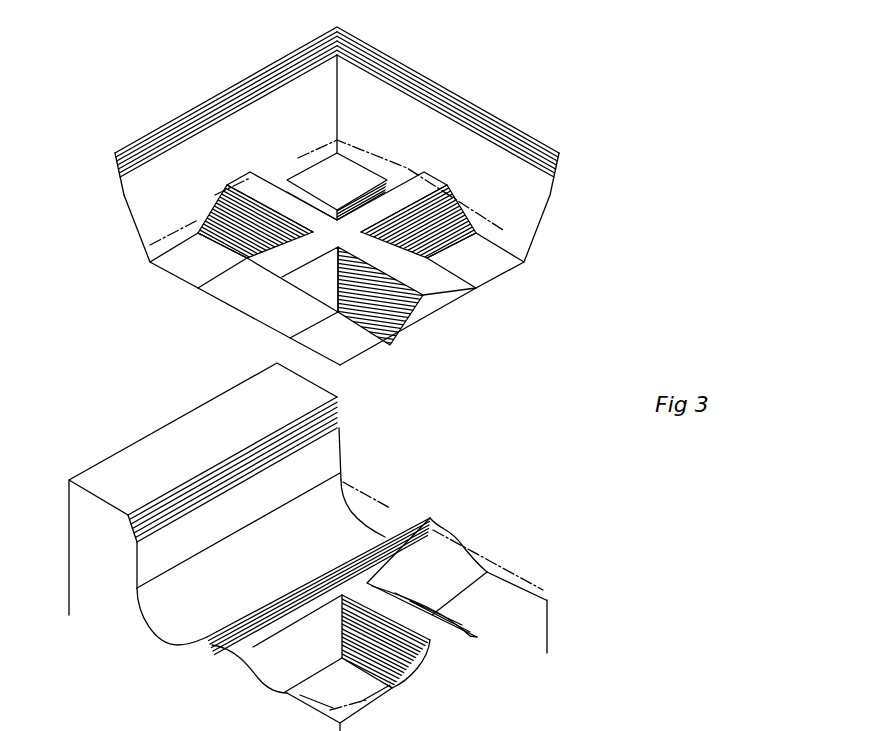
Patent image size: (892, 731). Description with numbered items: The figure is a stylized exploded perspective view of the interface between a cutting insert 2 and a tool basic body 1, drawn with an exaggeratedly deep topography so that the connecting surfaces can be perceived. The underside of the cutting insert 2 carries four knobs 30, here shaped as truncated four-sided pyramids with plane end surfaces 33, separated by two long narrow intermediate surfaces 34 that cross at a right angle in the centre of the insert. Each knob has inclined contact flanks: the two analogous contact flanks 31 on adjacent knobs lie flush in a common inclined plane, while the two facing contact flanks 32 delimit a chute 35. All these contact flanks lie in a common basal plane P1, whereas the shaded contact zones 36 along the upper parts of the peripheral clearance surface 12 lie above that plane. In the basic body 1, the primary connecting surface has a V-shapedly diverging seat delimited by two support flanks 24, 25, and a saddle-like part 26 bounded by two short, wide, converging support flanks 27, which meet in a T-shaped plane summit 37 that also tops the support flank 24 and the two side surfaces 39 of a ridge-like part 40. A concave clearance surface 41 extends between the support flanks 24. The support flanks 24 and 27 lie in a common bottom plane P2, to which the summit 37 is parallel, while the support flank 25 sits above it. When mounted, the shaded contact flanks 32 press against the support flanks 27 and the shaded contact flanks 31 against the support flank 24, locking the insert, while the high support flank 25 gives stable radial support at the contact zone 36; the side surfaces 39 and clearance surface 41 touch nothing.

The basic body 1 is at (353, 447).
The cutting insert 2 is at (568, 137).
The peripheral clearance surface 12 is at (142, 193).
The support flank 24 is at (308, 580).
The support flank 25 is at (220, 483).
The saddle-like part 26 is at (457, 662).
The support flanks 27 is at (393, 661).
The knobs 30 is at (312, 163).
The contact flanks 31 is at (255, 238).
The contact flanks 32 is at (385, 187).
The plane end surfaces 33 is at (210, 271).
The intermediate surfaces 34 is at (275, 268).
The chute 35 is at (240, 299).
The contact zones 36 is at (210, 108).
The summit 37 is at (430, 634).
The side surfaces 39 is at (315, 666).
The ridge-like part 40 is at (227, 661).
The concave clearance surface 41 is at (326, 541).
The basal plane P1 is at (522, 227).
The bottom plane P2 is at (497, 556).